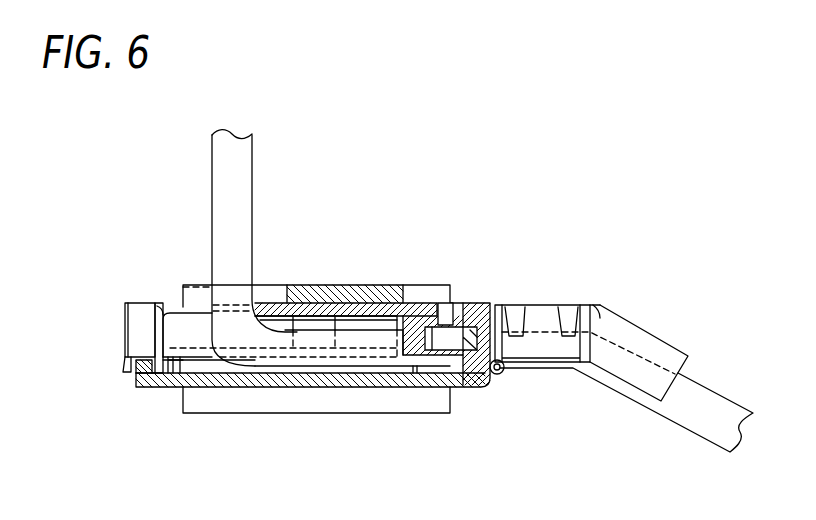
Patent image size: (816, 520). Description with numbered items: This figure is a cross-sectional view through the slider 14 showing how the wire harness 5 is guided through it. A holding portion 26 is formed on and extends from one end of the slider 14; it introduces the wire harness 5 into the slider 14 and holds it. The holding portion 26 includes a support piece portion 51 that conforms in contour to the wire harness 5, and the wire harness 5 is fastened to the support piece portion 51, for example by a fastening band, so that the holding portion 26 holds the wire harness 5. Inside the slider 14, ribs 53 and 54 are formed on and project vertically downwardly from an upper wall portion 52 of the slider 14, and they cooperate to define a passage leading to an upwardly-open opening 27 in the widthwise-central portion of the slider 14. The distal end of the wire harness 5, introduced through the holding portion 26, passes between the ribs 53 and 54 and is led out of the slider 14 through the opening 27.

The wire harness 5 is at (204, 172).
The slider 14 is at (180, 406).
The holding portion 26 is at (541, 304).
The opening 27 is at (180, 322).
The support piece portion 51 is at (625, 370).
The upper wall portion 52 is at (355, 312).
The rib 53 is at (308, 325).
The rib 54 is at (397, 356).